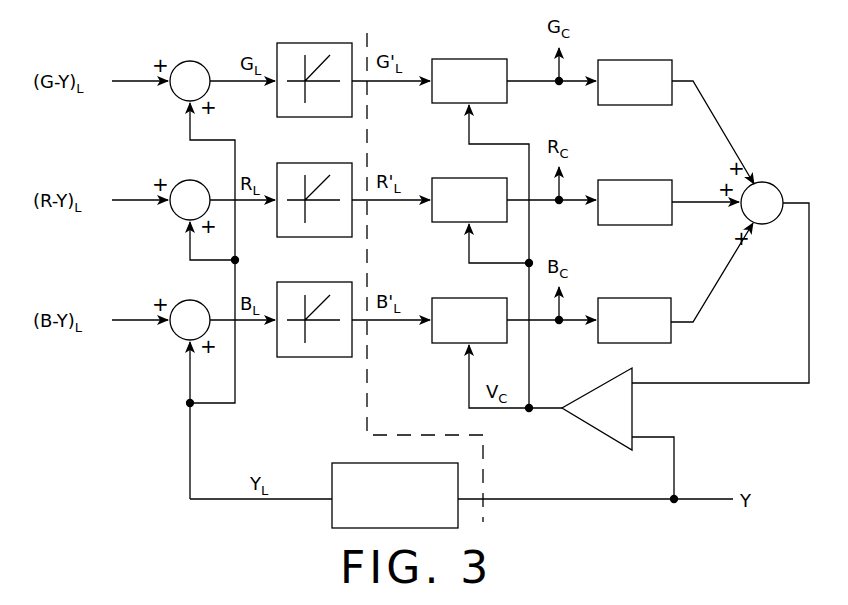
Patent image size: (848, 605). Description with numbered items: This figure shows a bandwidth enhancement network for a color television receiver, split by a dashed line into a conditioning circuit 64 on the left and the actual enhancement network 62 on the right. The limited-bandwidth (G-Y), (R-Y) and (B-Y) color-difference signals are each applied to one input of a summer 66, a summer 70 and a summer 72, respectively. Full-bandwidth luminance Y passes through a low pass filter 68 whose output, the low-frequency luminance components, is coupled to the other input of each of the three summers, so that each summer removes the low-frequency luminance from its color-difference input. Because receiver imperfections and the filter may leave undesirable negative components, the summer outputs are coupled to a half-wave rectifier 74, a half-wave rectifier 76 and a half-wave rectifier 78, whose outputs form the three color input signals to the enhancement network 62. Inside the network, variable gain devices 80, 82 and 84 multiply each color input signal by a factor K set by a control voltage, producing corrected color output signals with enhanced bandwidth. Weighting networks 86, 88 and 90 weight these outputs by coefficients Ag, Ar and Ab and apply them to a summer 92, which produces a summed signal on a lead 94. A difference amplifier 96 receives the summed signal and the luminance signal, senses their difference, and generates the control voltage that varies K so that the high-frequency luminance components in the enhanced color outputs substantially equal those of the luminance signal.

The enhancement network 62 is at (530, 56).
The conditioning circuit 64 is at (219, 48).
The summer 66 is at (178, 97).
The low pass filter 68 is at (330, 512).
The summer 70 is at (178, 217).
The summer 72 is at (178, 338).
The half-wave rectifier 74 is at (318, 118).
The half-wave rectifier 76 is at (318, 238).
The half-wave rectifier 78 is at (318, 358).
The variable gain device 80 is at (446, 105).
The variable gain device 82 is at (446, 224).
The variable gain device 84 is at (446, 345).
The weighting network 86 is at (642, 106).
The weighting network 88 is at (642, 226).
The weighting network 90 is at (650, 344).
The summer 92 is at (783, 195).
The lead 94 is at (808, 325).
The difference amplifier 96 is at (634, 412).